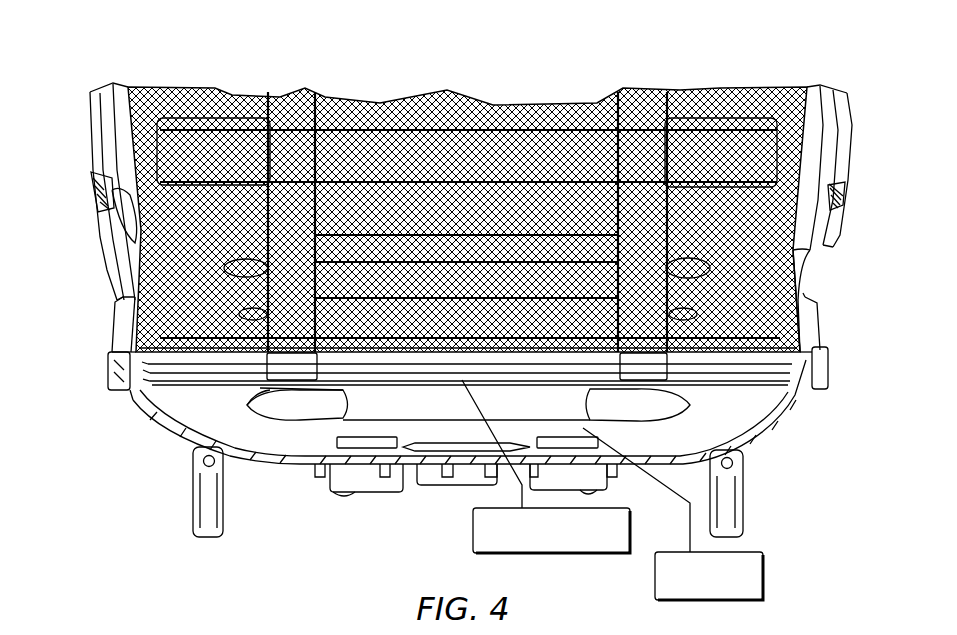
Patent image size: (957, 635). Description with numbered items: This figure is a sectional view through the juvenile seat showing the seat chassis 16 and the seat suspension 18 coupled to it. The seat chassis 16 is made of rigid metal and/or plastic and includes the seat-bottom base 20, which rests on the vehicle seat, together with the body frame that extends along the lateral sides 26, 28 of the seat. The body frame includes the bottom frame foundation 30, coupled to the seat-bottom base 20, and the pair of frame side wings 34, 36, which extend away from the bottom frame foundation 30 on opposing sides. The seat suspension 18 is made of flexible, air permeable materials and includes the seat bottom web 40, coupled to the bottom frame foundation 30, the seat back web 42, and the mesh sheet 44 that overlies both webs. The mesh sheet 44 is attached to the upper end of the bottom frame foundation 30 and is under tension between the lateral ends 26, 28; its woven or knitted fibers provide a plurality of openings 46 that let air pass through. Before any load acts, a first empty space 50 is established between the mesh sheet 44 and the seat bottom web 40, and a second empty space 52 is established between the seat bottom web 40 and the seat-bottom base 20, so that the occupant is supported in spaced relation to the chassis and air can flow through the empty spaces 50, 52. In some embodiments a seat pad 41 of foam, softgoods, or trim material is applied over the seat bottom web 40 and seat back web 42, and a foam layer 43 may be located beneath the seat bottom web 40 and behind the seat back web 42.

The seat chassis 16 is at (860, 118).
The seat suspension 18 is at (718, 408).
The seat-bottom base 20 is at (424, 497).
The lateral side 26 is at (866, 298).
The lateral side 28 is at (88, 294).
The bottom frame foundation 30 is at (118, 404).
The frame side wing 34 is at (850, 190).
The frame side wing 36 is at (85, 216).
The seat bottom web 40 is at (288, 405).
The seat pad 41 is at (597, 555).
The seat back web 42 is at (322, 78).
The foam layer 43 is at (765, 553).
The mesh sheet 44 is at (793, 253).
The openings 46 is at (803, 284).
The first empty space 50 is at (190, 362).
The second empty space 52 is at (225, 417).